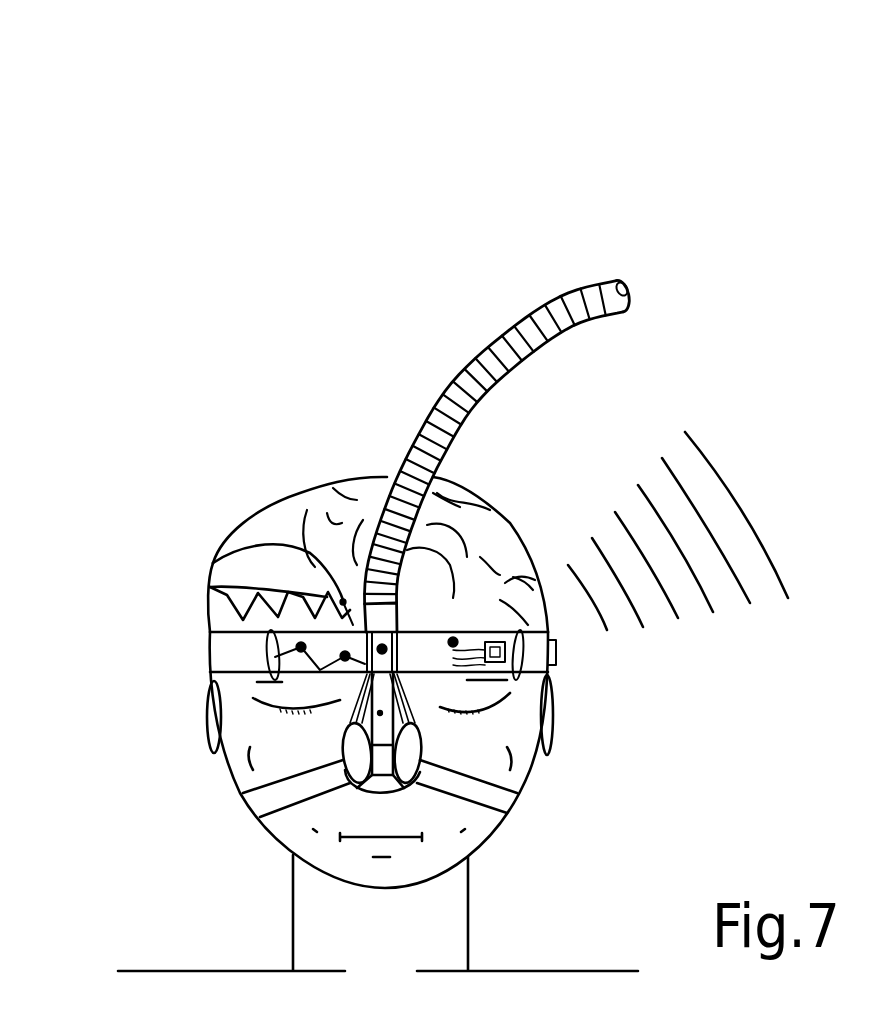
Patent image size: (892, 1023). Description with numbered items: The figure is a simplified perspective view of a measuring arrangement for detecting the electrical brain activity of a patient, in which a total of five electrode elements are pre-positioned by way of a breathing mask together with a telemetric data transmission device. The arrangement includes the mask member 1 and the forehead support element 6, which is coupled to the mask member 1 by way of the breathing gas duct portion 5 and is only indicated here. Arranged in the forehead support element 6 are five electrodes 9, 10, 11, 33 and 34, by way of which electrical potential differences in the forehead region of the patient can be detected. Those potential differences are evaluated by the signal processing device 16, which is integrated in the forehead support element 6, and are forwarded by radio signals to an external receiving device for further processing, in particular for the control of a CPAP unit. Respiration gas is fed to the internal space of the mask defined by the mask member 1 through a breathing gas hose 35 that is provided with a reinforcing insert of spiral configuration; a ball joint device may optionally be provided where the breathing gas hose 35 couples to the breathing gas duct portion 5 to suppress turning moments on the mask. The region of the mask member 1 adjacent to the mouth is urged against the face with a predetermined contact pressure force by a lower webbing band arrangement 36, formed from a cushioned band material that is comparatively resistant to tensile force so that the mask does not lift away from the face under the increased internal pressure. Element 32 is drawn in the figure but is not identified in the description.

The mask member 1 is at (380, 713).
The breathing gas duct portion 5 is at (343, 602).
The forehead support element 6 is at (327, 645).
The electrode 9 is at (273, 678).
The electrode 10 is at (368, 676).
The electrode 11 is at (453, 642).
The signal processing device 16 is at (553, 664).
The headband 32 is at (240, 650).
The electrode 33 is at (253, 698).
The electrode 34 is at (494, 645).
The breathing gas hose 35 is at (660, 262).
The lower webbing band arrangement 36 is at (277, 797).